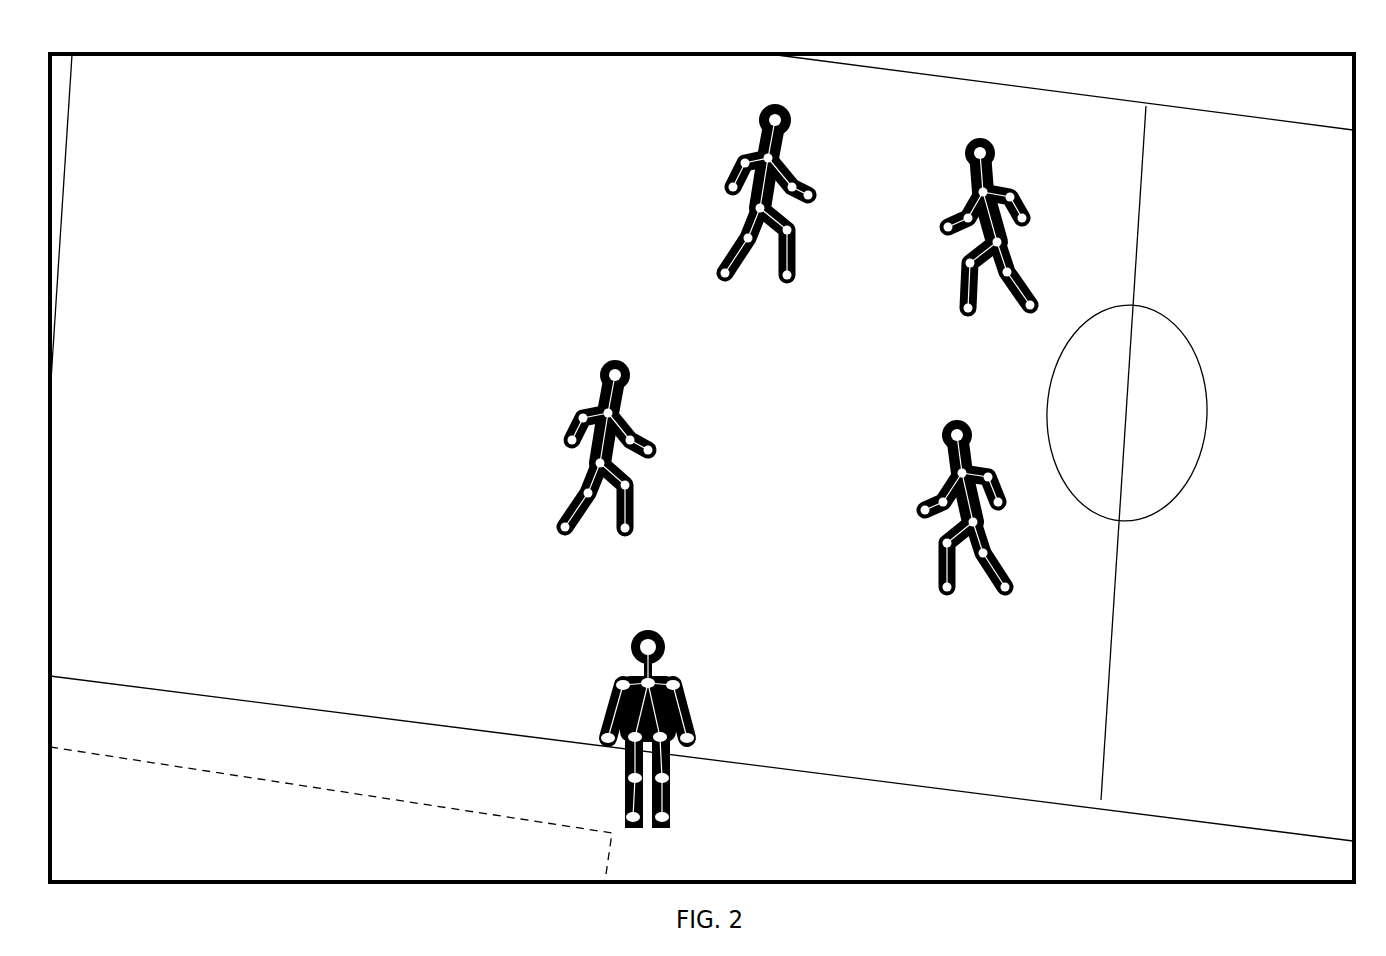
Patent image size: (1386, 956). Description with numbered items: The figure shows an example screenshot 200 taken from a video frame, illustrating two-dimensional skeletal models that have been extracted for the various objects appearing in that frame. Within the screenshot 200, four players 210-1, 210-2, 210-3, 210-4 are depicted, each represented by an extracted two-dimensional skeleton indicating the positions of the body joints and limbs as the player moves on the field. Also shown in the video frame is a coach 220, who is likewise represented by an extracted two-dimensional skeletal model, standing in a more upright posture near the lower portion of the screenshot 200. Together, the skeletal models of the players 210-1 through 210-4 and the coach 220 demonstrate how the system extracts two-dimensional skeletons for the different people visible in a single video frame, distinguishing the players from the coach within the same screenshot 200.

The screenshot 200 is at (1042, 53).
The player 210-1 is at (737, 157).
The player 210-2 is at (588, 400).
The player 210-3 is at (963, 148).
The player 210-4 is at (942, 435).
The coach 220 is at (631, 648).